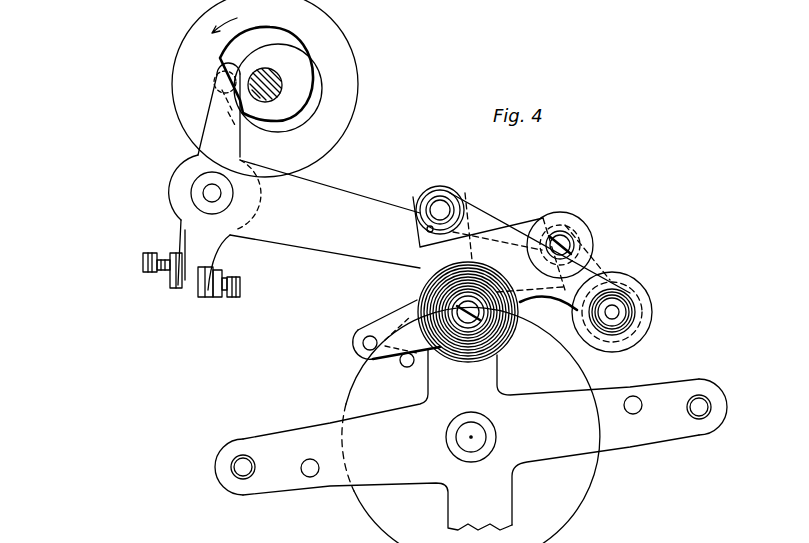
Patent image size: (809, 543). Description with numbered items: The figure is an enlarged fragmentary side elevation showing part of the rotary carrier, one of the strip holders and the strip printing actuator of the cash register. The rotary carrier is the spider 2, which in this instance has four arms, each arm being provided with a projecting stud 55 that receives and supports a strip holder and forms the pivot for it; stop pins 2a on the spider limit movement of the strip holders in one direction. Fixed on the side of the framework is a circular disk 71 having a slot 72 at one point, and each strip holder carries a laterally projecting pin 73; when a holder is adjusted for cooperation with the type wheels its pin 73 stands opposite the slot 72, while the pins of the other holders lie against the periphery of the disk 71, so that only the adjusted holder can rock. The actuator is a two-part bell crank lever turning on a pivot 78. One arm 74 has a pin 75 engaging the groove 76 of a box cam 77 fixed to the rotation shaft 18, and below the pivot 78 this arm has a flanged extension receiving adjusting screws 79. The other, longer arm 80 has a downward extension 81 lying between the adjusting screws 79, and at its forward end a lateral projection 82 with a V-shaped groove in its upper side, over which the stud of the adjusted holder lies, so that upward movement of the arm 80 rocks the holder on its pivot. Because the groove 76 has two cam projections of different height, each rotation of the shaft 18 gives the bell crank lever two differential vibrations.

The spider 2 is at (547, 408).
The stop pins 2a is at (423, 270).
The rotation shaft 18 is at (273, 82).
The projecting pin or stud 55 is at (440, 210).
The circular disk 71 is at (578, 487).
The slot 72 is at (406, 366).
The laterally projecting pin 73 is at (363, 343).
The arm of bell crank lever 74 is at (210, 127).
The pin 75 is at (212, 78).
The groove of box cam 76 is at (317, 88).
The box cam 77 is at (343, 107).
The pivot 78 is at (212, 193).
The adjusting screws 79 is at (228, 292).
The arm of bell crank lever 80 is at (345, 205).
The downward extension 81 is at (195, 276).
The lateral projection 82 is at (612, 272).